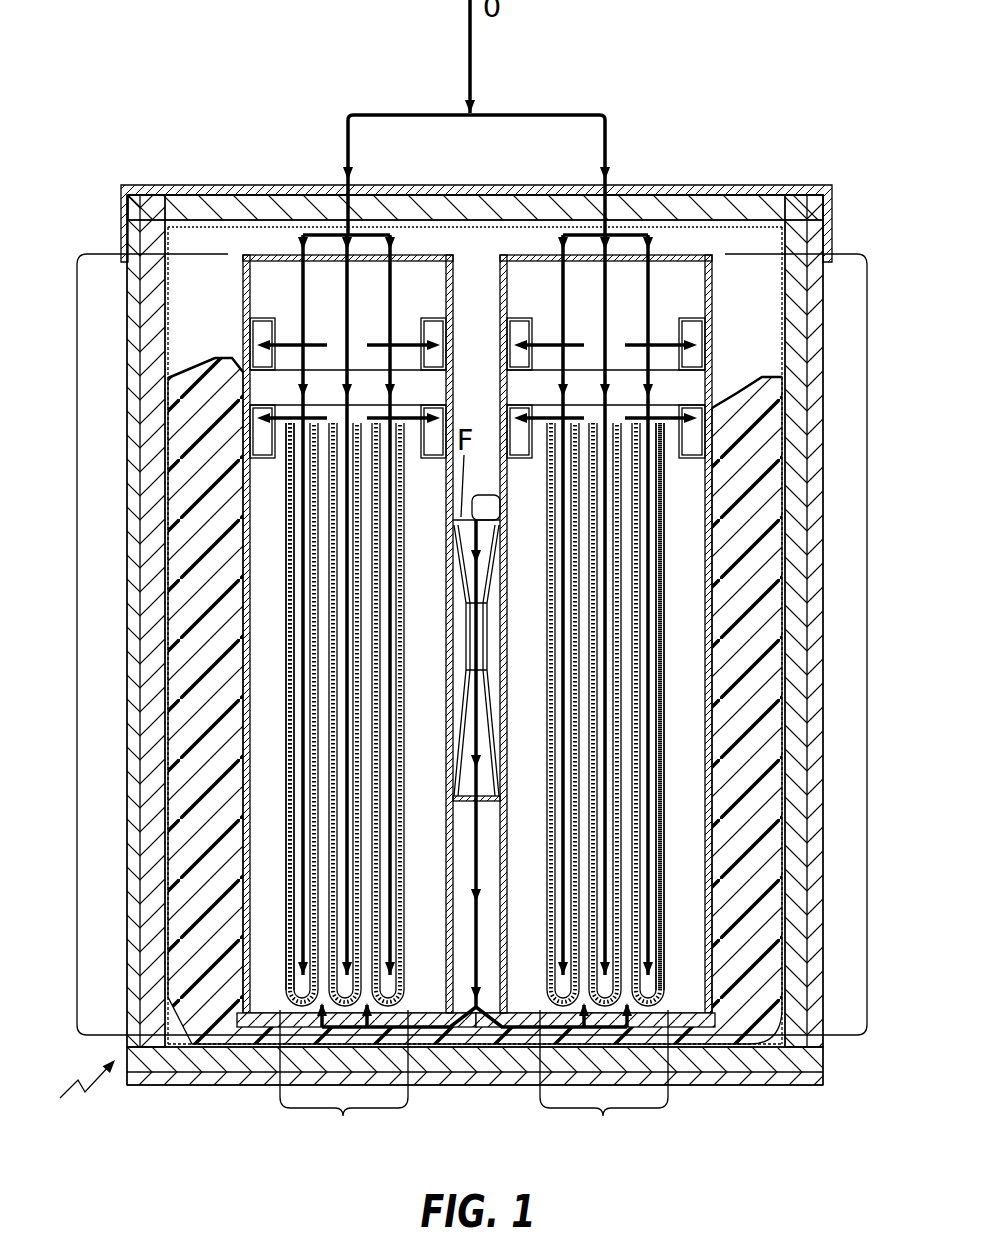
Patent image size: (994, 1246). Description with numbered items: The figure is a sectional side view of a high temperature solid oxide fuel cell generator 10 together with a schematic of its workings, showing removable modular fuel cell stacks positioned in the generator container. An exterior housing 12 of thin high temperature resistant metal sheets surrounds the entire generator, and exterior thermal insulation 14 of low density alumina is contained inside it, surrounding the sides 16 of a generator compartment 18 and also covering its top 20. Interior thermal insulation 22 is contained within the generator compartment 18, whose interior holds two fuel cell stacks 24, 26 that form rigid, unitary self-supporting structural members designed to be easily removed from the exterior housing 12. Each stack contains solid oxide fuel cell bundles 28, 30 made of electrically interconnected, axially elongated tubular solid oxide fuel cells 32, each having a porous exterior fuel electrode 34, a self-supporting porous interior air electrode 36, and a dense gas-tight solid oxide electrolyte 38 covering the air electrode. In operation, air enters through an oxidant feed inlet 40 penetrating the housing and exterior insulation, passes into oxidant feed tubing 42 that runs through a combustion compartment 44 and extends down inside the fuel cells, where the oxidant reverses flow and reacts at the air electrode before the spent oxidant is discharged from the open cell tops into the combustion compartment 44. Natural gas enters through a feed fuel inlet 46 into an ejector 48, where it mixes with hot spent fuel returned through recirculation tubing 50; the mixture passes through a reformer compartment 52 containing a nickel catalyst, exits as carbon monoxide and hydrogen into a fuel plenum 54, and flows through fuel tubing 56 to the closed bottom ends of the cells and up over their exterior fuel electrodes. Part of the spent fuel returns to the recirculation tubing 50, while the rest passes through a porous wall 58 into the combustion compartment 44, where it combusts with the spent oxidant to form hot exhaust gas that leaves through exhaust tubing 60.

The solid oxide fuel cell generator 10 is at (61, 1126).
The exterior housing 12 is at (697, 192).
The exterior thermal insulation 14 is at (755, 212).
The sides of generator compartment 16 is at (165, 800).
The generator compartment 18 is at (200, 625).
The top of generator compartment 20 is at (250, 218).
The interior thermal insulation 22 is at (190, 430).
The fuel cell stack 24 is at (78, 641).
The fuel cell stack 26 is at (868, 651).
The solid oxide fuel cell bundle 28 is at (356, 704).
The solid oxide fuel cell bundle 30 is at (595, 704).
The tubular solid oxide fuel cell 32 is at (290, 935).
The fuel electrode 34 is at (287, 807).
The air electrode 36 is at (313, 853).
The solid oxide electrolyte 38 is at (287, 893).
The oxidant feed inlet 40 is at (482, 70).
The oxidant feed tubing 42 is at (388, 318).
The combustion compartment 44 is at (290, 268).
The feed fuel inlet 46 is at (497, 498).
The ejector 48 is at (462, 583).
The recirculation tubing 50 is at (262, 455).
The reformer compartment 52 is at (450, 958).
The fuel plenum 54 is at (443, 1062).
The fuel tubing 56 is at (520, 1046).
The porous wall 58 is at (326, 383).
The exhaust tubing 60 is at (263, 332).